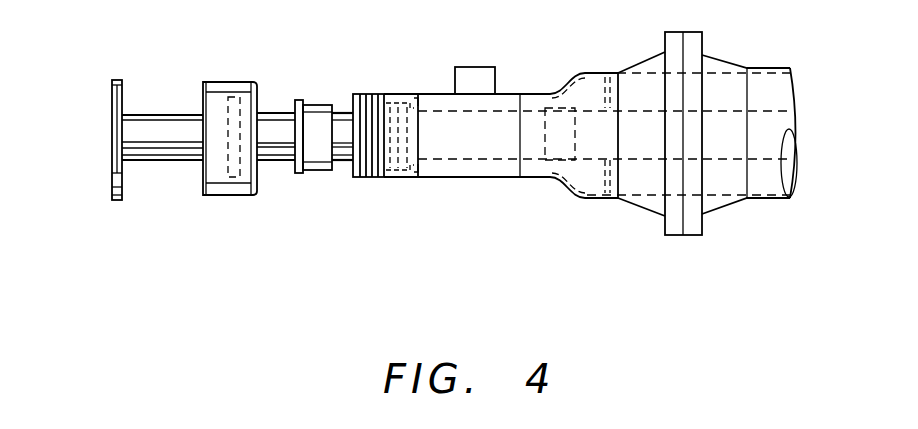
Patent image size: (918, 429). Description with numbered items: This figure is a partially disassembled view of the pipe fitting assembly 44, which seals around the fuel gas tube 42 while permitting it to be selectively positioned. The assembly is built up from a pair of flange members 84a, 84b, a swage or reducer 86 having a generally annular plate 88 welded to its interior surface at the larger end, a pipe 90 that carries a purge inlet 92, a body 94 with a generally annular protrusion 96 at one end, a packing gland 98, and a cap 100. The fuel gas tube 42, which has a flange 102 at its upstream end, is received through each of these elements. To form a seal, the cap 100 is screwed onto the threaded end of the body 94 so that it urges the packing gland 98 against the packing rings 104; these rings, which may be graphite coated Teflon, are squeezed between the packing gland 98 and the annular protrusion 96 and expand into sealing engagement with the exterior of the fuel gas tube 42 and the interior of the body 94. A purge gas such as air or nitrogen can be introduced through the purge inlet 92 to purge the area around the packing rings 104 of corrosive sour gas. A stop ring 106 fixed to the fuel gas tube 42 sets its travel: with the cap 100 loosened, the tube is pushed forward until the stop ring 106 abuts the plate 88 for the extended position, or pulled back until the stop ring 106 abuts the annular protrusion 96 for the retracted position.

The fuel gas tube 42 is at (152, 115).
The pipe fitting assembly 44 is at (435, 200).
The flange member 84a is at (730, 211).
The flange member 84b is at (647, 211).
The swage 86 is at (587, 199).
The annular plate 88 is at (603, 80).
The pipe 90 is at (475, 178).
The purge inlet 92 is at (488, 67).
The body 94 is at (382, 178).
The annular protrusion 96 is at (420, 102).
The packing gland 98 is at (313, 172).
The cap 100 is at (228, 196).
The flange 102 is at (112, 88).
The packing rings 104 is at (386, 103).
The stop ring 106 is at (552, 160).